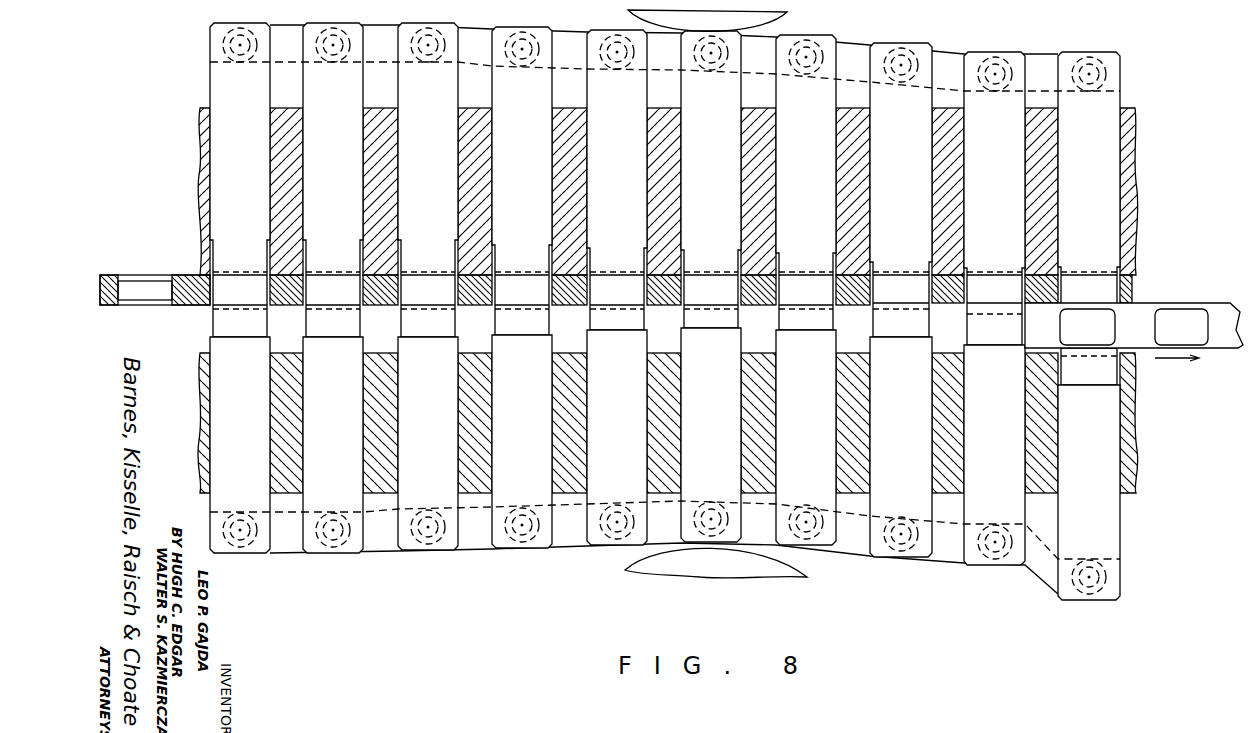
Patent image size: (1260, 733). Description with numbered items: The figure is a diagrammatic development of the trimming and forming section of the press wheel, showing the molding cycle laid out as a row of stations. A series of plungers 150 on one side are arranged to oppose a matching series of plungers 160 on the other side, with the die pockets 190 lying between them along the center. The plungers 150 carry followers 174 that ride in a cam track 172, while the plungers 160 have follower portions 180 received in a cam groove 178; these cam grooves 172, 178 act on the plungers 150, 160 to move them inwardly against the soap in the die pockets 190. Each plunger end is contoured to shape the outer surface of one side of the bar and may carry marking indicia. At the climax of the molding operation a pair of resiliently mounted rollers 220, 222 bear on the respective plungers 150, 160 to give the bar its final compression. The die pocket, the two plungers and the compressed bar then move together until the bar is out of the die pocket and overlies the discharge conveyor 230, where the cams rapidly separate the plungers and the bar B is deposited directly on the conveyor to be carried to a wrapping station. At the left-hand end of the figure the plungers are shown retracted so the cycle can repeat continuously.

The plungers 150 is at (227, 452).
The plungers 160 is at (225, 196).
The track 172 is at (385, 552).
The followers 174 is at (243, 553).
The cam groove 178 is at (293, 62).
The follower portions 180 is at (225, 47).
The die pockets 190 is at (120, 304).
The roller 220 is at (775, 570).
The roller 222 is at (770, 15).
The discharge conveyor 230 is at (1207, 303).
The bottle B is at (1106, 342).